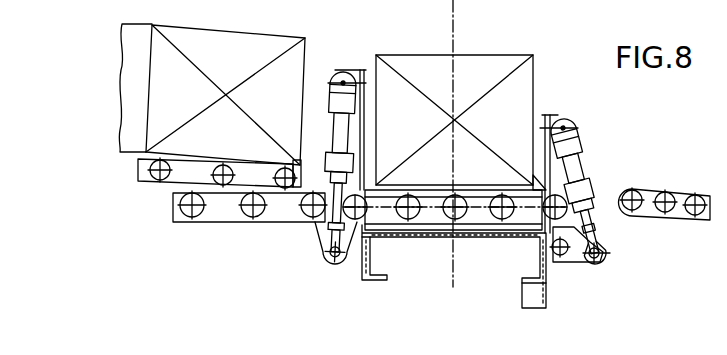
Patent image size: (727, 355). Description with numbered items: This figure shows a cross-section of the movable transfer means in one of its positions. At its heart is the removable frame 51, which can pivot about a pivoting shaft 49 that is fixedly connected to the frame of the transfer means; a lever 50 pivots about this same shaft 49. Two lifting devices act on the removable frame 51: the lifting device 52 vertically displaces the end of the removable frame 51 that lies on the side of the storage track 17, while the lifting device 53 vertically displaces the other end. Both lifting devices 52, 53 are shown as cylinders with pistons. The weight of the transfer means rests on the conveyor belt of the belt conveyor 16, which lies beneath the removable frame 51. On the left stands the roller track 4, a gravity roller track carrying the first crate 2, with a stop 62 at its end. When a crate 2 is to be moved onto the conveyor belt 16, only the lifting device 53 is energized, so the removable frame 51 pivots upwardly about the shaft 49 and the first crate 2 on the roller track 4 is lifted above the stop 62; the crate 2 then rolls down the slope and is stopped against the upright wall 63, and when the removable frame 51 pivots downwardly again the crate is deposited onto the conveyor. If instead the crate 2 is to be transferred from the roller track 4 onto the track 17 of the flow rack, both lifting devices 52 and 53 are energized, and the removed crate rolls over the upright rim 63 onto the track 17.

The crate 2 is at (232, 55).
The roller track 4 is at (148, 177).
The belt conveyor 16 is at (528, 245).
The storage track 17 is at (672, 219).
The pivoting shaft 49 is at (580, 262).
The lever 50 is at (597, 262).
The removable frame 51 is at (230, 210).
The lifting device 52 is at (605, 205).
The lifting device 53 is at (340, 127).
The stop 62 is at (288, 188).
The upright wall 63 is at (562, 262).